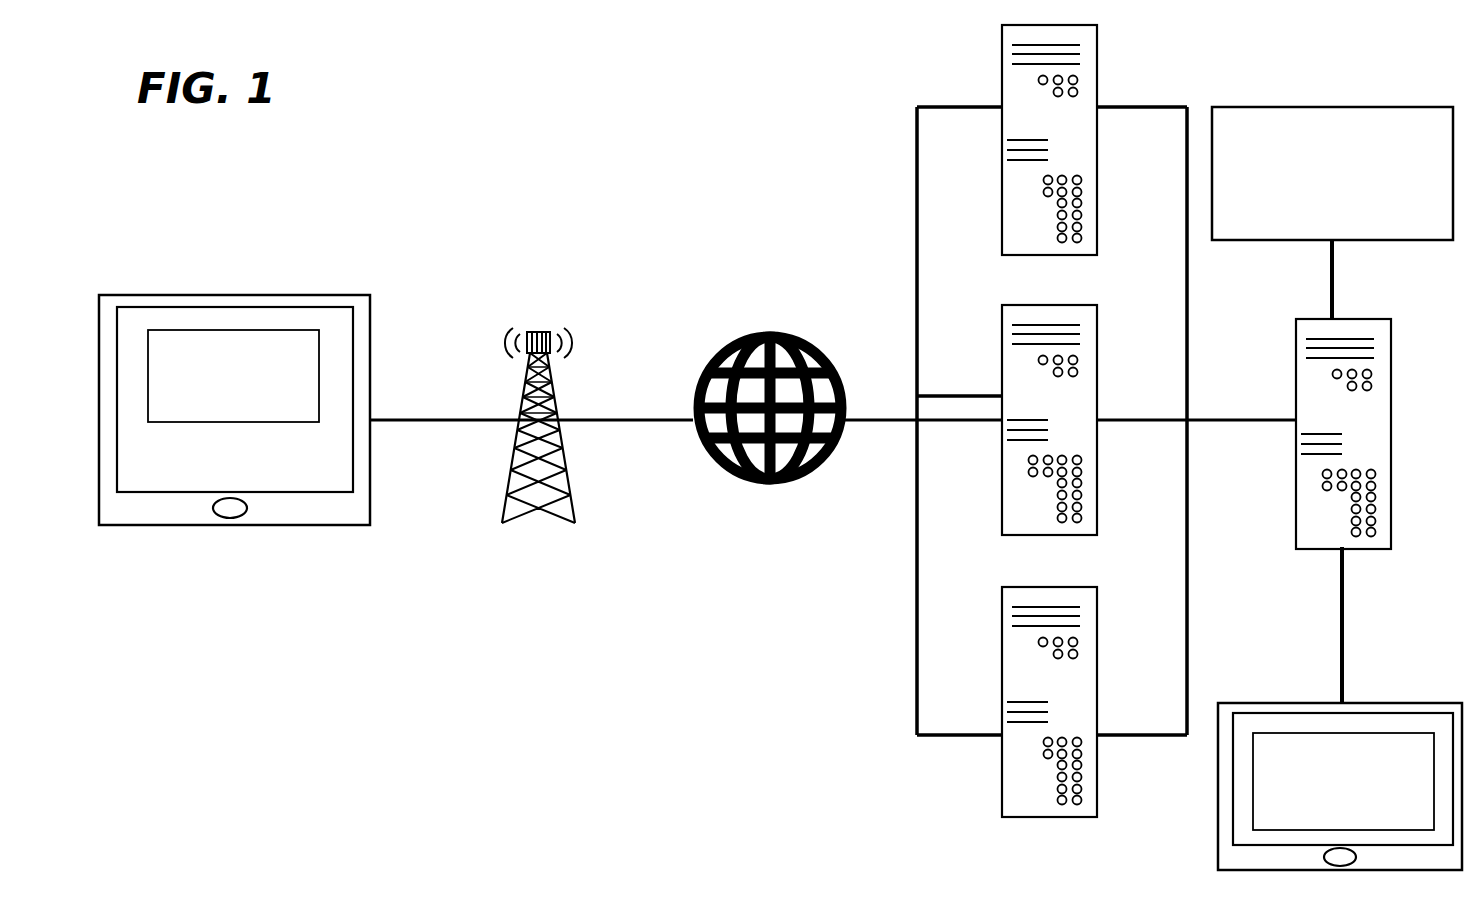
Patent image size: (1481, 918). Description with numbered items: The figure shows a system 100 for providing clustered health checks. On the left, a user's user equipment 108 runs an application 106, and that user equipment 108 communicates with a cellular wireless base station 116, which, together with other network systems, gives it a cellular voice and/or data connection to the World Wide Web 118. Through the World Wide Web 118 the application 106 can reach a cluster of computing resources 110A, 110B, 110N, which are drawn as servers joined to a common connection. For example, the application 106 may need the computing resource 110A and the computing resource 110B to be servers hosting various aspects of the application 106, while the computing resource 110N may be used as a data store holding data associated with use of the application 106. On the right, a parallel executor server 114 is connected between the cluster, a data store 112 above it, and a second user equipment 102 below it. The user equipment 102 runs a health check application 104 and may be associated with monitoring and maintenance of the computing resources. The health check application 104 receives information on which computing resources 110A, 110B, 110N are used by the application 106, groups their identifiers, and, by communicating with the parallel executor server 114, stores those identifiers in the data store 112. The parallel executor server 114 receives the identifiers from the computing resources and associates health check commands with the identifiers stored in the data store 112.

The system 100 is at (483, 72).
The user equipment 102 is at (1350, 703).
The health check application 104 is at (1405, 806).
The application 106 is at (215, 399).
The user equipment 108 is at (205, 295).
The computing resource 110A is at (1097, 205).
The computing resource 110B is at (1097, 480).
The computing resource 110N is at (1097, 668).
The data store 112 is at (1351, 197).
The parallel executor server 114 is at (1296, 482).
The cellular wireless base station 116 is at (523, 403).
The World Wide Web 118 is at (750, 333).